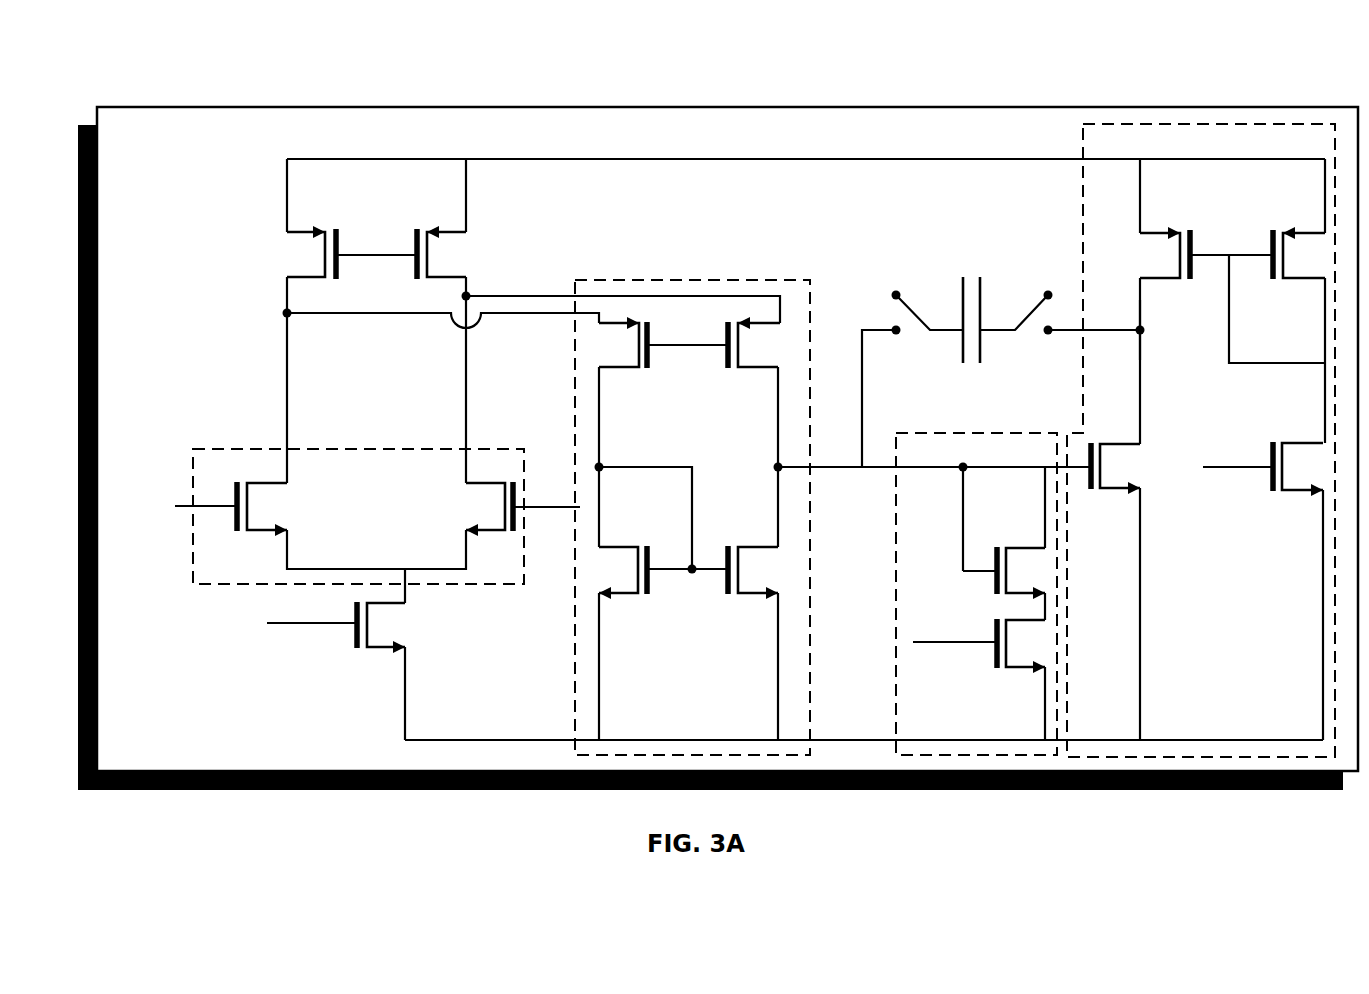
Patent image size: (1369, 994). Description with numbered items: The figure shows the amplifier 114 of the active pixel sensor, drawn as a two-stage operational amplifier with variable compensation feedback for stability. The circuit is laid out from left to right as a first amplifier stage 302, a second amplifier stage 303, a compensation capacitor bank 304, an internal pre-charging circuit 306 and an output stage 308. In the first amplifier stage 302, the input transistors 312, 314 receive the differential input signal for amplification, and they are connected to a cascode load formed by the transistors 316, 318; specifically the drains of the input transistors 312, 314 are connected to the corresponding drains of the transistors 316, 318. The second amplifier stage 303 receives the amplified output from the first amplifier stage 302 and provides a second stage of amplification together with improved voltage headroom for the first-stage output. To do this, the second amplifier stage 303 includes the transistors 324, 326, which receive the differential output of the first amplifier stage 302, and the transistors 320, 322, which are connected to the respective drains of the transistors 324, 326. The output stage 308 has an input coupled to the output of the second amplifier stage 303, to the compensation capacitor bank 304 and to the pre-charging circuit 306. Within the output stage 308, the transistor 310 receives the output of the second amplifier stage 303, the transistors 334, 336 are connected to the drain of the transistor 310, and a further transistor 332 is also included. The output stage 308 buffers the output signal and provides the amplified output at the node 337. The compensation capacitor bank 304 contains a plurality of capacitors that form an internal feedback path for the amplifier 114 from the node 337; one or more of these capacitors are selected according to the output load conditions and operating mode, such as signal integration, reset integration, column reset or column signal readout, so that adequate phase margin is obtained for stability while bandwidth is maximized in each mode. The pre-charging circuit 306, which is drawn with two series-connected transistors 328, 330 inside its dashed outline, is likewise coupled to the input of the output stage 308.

The amplifier 114 is at (104, 100).
The first amplifier stage 302 is at (238, 449).
The second amplifier stage 303 is at (675, 279).
The compensation capacitor bank 304 is at (963, 233).
The internal pre-charging circuit 306 is at (930, 757).
The output stage 308 is at (1238, 123).
The transistor 310 is at (1112, 493).
The input transistor 312 is at (288, 468).
The input transistor 314 is at (466, 466).
The transistor 316 is at (333, 229).
The transistor 318 is at (419, 229).
The transistor 320 is at (646, 547).
The transistor 322 is at (730, 547).
The transistor 324 is at (646, 368).
The transistor 326 is at (730, 368).
The precharge NMOS transistor 328 is at (997, 548).
The precharge NMOS transistor 330 is at (997, 668).
The transistor 332 is at (1268, 492).
The transistor 334 is at (1188, 230).
The transistor 336 is at (1275, 230).
The node 337 is at (1143, 330).